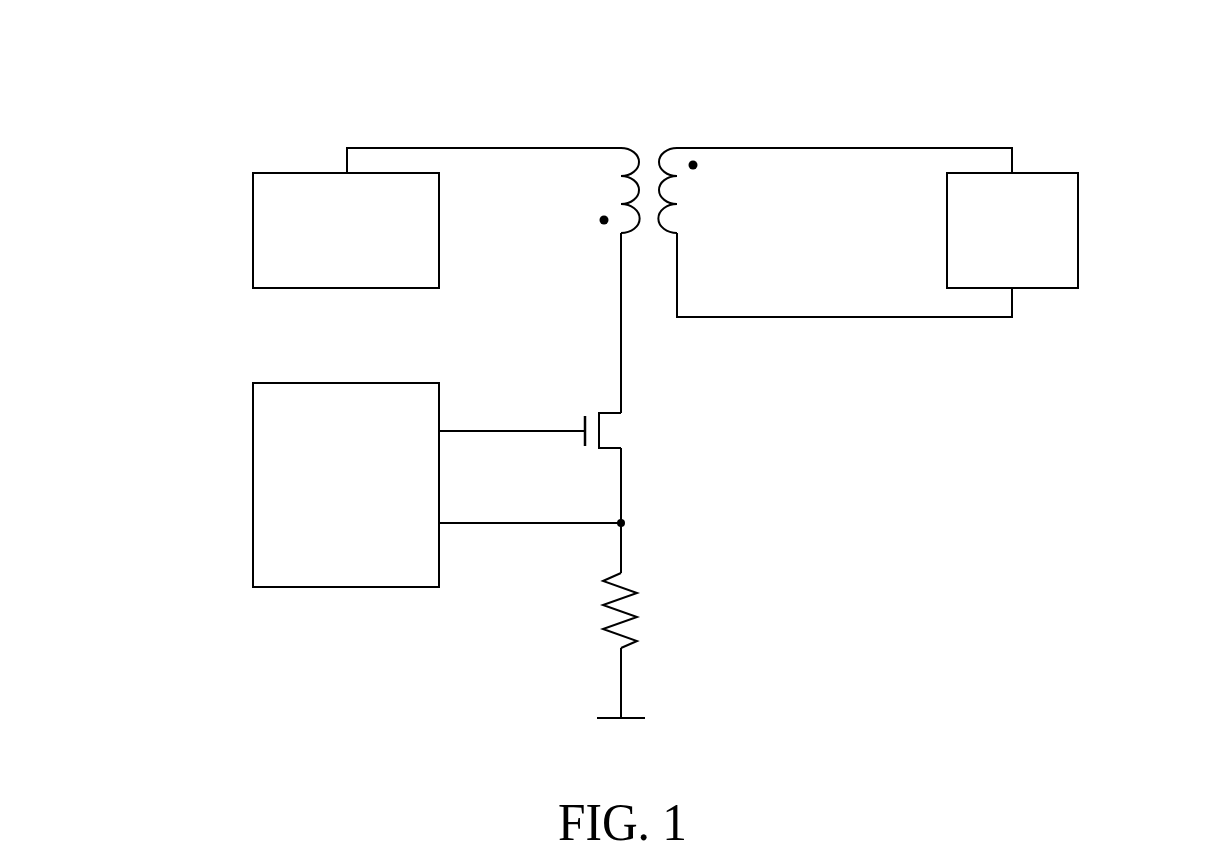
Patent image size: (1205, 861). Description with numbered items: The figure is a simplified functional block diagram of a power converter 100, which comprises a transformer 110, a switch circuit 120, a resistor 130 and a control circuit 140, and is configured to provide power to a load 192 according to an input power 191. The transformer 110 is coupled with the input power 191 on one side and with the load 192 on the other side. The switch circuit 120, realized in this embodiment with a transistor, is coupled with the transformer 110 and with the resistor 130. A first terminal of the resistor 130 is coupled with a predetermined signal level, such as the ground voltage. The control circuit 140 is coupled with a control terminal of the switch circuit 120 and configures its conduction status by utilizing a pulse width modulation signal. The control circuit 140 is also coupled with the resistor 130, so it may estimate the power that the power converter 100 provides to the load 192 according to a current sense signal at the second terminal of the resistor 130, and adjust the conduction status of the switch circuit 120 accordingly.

The power converter 100 is at (158, 87).
The transformer 110 is at (654, 141).
The switch circuit 120 is at (634, 432).
The resistor 130 is at (634, 606).
The control circuit 140 is at (253, 485).
The input power 191 is at (253, 230).
The load 192 is at (1078, 229).